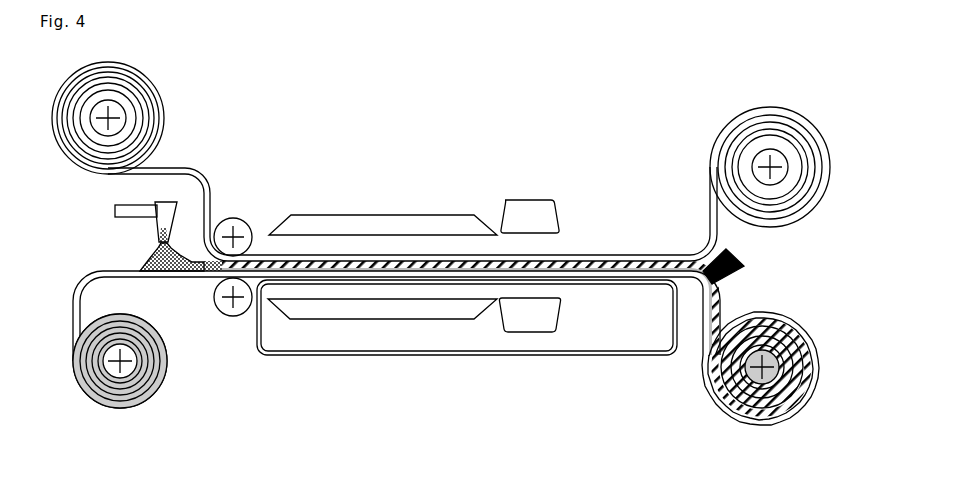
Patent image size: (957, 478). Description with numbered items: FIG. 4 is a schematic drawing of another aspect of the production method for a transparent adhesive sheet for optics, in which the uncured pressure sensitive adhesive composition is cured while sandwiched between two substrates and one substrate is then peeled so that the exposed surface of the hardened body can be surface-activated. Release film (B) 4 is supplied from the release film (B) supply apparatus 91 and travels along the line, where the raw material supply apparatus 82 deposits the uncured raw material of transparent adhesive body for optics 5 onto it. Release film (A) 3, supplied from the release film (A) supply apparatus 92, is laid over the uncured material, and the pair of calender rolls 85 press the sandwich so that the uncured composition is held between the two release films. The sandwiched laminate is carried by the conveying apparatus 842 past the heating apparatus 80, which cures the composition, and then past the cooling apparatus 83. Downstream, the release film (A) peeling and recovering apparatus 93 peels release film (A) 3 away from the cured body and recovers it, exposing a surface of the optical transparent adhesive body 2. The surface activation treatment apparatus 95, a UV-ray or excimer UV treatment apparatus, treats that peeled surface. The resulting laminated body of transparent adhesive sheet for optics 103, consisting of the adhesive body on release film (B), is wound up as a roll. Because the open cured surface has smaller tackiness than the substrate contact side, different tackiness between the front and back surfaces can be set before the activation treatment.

The optical transparent adhesive body 2 is at (727, 317).
The release film (A) 3 is at (190, 163).
The release film (B) 4 is at (80, 296).
The uncured raw material of transparent adhesive body for optics 5 is at (146, 256).
The heating apparatus (heater) 80 is at (355, 214).
The raw material supply apparatus 82 is at (113, 211).
The cooling apparatus 83 is at (519, 200).
The calender roll 85 is at (230, 214).
The release film (B) supply apparatus (roll) 91 is at (160, 392).
The release film (A) supply apparatus (roll) 92 is at (158, 95).
The release film (A) peeling and recovering apparatus (roll) 93 is at (757, 109).
The surface activation treatment apparatus 95 is at (744, 259).
The laminated body of transparent adhesive sheet for optics 103 is at (800, 330).
The conveying apparatus (conveyor) 842 is at (273, 358).